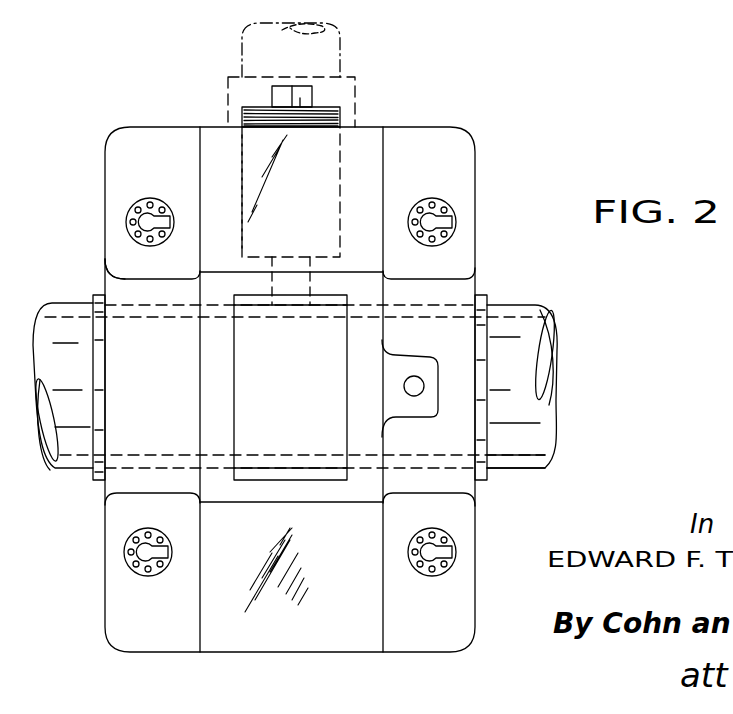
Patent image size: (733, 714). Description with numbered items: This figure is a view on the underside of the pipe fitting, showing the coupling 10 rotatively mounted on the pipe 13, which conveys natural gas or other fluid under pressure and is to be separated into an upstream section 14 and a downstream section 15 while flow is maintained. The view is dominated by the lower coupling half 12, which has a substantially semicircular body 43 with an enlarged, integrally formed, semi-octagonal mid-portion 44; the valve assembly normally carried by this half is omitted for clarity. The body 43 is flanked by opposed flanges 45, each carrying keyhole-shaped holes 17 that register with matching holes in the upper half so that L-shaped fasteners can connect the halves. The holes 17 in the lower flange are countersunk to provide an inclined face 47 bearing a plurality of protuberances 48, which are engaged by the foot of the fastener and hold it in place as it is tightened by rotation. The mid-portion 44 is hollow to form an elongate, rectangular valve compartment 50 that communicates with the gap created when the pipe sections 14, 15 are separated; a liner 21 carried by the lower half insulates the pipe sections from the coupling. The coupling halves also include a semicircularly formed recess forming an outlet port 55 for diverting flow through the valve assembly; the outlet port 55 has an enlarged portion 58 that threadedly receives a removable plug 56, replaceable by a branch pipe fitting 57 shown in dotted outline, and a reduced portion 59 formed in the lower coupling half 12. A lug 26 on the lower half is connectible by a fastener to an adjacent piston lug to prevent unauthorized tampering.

The coupling 10 is at (483, 268).
The lower coupling half 12 is at (407, 127).
The pipe 13 is at (544, 304).
The upstream pipe section 14 is at (75, 478).
The downstream pipe section 15 is at (520, 468).
The keyhole-shaped holes 17 is at (130, 218).
The liner 21 is at (488, 296).
The lug 26 is at (447, 345).
The semicircular body 43 is at (105, 268).
The semi-octagonal mid-portion 44 is at (200, 165).
The flanges 45 is at (452, 127).
The inclined face 47 is at (138, 201).
The protuberances 48 is at (128, 225).
The valve compartment 50 is at (236, 375).
The outlet port 55 is at (246, 153).
The removable plug 56 is at (323, 107).
The branch pipe fitting 57 is at (342, 40).
The enlarged portion 58 is at (338, 195).
The reduced portion 59 is at (312, 260).